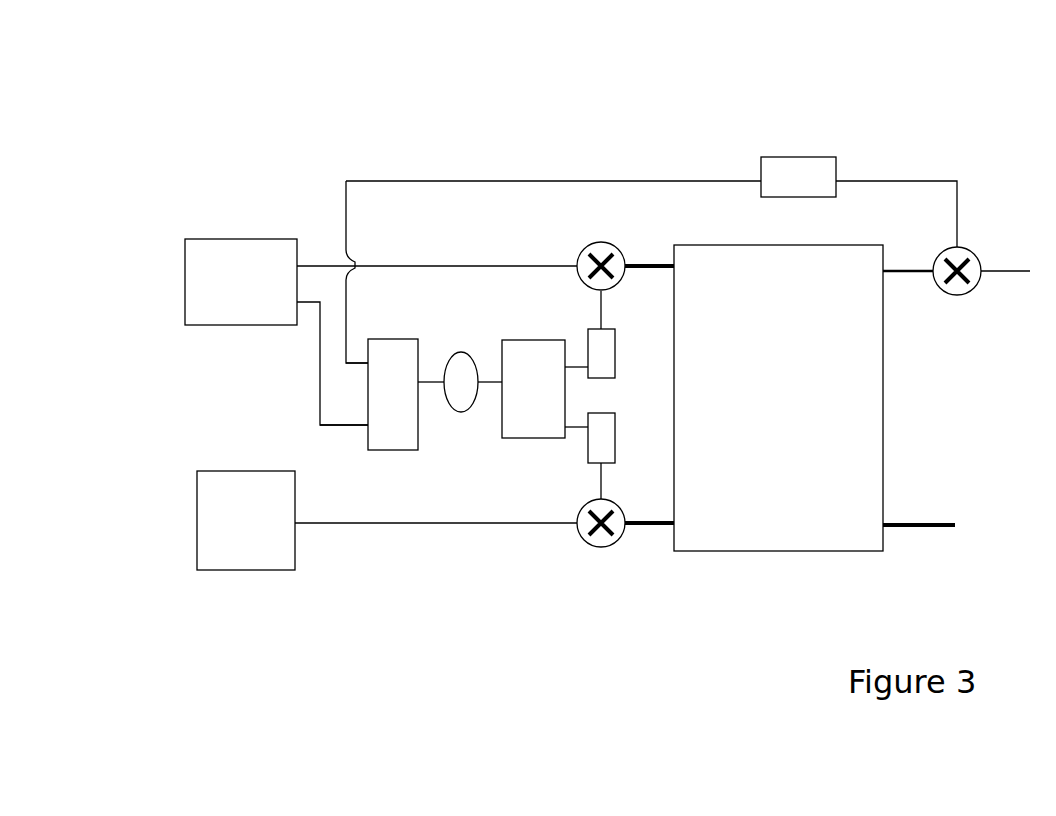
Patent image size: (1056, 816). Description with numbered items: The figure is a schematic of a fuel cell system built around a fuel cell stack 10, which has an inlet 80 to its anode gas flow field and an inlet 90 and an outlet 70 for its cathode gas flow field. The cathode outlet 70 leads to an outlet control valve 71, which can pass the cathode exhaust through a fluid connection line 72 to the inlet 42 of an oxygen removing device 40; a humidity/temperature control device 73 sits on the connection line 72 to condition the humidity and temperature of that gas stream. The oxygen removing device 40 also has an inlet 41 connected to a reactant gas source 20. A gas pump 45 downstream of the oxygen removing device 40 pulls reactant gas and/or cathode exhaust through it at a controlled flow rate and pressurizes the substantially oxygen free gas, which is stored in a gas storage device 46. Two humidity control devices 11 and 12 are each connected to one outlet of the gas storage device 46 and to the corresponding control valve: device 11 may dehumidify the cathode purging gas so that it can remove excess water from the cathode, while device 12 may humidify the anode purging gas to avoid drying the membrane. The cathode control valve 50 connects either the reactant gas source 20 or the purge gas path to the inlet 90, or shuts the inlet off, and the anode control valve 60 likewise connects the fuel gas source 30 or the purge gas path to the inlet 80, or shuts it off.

The fuel cell stack 10 is at (814, 398).
The humidity control device 11 is at (587, 330).
The humidity control device 12 is at (587, 452).
The reactant gas source 20 is at (381, 332).
The fuel gas source 30 is at (387, 520).
The oxygen removing device 40 is at (406, 394).
The inlet 41 is at (345, 428).
The inlet 42 is at (357, 360).
The gas pump 45 is at (456, 407).
The gas storage device 46 is at (545, 389).
The cathode control valve 50 is at (586, 247).
The anode control valve 60 is at (586, 547).
The outlet 70 is at (910, 275).
The outlet control valve 71 is at (974, 255).
The fluid connection line 72 is at (691, 180).
The humidity/temperature control device 73 is at (815, 157).
The inlet 80 is at (652, 530).
The inlet 90 is at (652, 263).